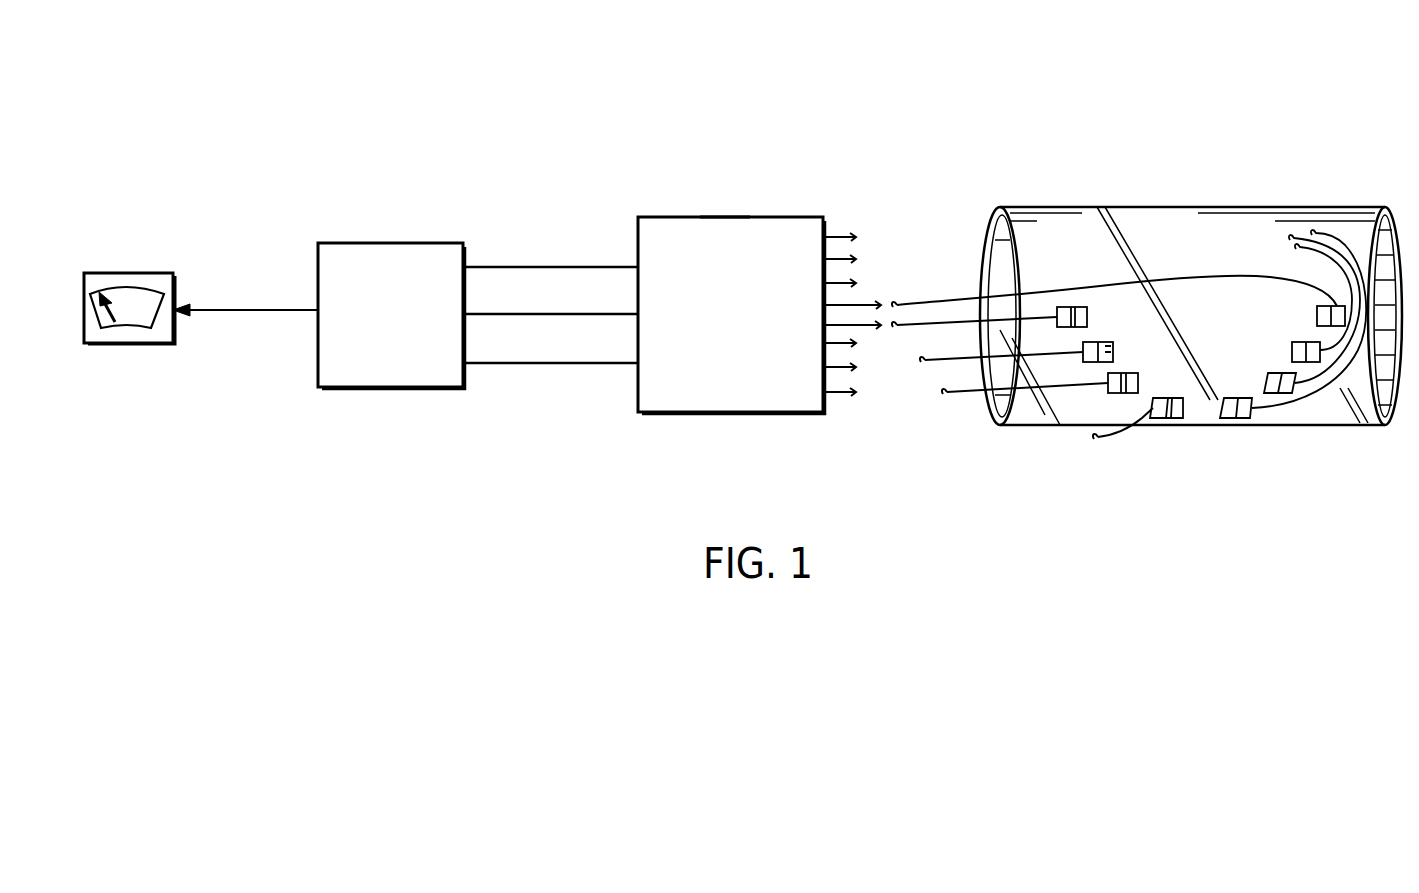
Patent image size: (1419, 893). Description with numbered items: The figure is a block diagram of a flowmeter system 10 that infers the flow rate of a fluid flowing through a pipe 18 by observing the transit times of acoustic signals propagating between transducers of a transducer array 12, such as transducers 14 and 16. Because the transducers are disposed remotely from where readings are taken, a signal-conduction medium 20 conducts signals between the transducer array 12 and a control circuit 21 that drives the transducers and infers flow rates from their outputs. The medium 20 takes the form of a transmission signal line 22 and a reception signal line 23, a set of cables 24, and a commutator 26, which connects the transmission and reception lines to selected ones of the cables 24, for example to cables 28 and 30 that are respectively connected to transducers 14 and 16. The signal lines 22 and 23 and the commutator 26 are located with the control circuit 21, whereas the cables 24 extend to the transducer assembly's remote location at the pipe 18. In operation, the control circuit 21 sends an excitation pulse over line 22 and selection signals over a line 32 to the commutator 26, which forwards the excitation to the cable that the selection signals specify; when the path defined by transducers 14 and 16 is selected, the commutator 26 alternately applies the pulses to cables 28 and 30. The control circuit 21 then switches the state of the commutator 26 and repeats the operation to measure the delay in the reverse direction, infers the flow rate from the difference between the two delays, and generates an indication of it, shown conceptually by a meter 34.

The flowmeter system 10 is at (502, 108).
The transducer array 12 is at (1354, 180).
The transducer 14 is at (1317, 312).
The transducer 16 is at (1090, 316).
The pipe 18 is at (1212, 212).
The signal-conduction medium 20 is at (692, 164).
The control circuit 21 is at (389, 242).
The transmission signal line 22 is at (543, 264).
The reception signal line 23 is at (537, 312).
The cables 24 is at (888, 237).
The commutator 26 is at (723, 216).
The cable 28 is at (916, 300).
The cable 30 is at (906, 331).
The selection signal line 32 is at (540, 362).
The meter 34 is at (130, 271).